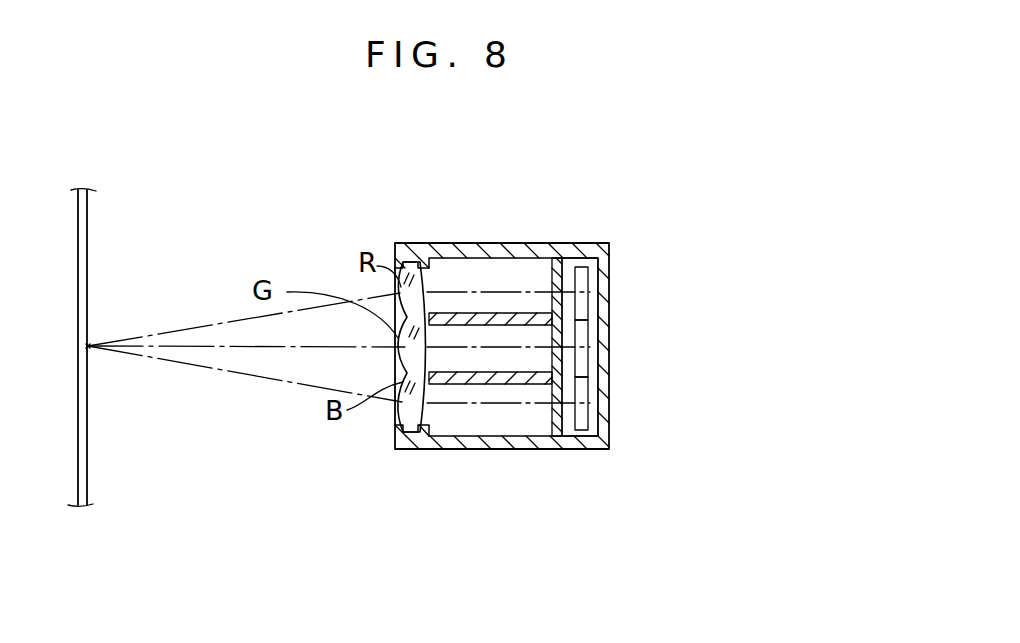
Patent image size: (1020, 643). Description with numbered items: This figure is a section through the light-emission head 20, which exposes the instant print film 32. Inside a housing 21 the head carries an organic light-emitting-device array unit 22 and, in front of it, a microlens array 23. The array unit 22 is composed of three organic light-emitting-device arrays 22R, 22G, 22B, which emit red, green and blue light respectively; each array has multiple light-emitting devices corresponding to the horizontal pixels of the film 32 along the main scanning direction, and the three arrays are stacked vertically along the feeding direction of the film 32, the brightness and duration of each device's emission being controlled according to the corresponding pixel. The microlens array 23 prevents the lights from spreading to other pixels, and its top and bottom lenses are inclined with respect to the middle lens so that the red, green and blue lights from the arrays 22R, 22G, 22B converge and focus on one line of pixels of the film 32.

The light-emission head 20 is at (513, 449).
The housing 21 is at (606, 245).
The organic light-emitting-device array unit 22 is at (580, 263).
The organic light-emitting-device array 22R is at (590, 305).
The organic light-emitting-device array 22G is at (588, 362).
The organic light-emitting-device array 22B is at (590, 407).
The microlens array 23 is at (388, 415).
The film 32 is at (88, 193).